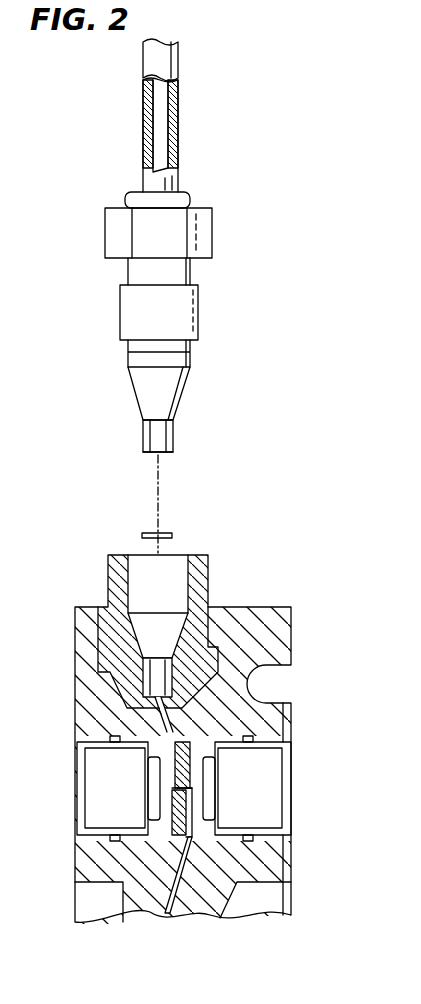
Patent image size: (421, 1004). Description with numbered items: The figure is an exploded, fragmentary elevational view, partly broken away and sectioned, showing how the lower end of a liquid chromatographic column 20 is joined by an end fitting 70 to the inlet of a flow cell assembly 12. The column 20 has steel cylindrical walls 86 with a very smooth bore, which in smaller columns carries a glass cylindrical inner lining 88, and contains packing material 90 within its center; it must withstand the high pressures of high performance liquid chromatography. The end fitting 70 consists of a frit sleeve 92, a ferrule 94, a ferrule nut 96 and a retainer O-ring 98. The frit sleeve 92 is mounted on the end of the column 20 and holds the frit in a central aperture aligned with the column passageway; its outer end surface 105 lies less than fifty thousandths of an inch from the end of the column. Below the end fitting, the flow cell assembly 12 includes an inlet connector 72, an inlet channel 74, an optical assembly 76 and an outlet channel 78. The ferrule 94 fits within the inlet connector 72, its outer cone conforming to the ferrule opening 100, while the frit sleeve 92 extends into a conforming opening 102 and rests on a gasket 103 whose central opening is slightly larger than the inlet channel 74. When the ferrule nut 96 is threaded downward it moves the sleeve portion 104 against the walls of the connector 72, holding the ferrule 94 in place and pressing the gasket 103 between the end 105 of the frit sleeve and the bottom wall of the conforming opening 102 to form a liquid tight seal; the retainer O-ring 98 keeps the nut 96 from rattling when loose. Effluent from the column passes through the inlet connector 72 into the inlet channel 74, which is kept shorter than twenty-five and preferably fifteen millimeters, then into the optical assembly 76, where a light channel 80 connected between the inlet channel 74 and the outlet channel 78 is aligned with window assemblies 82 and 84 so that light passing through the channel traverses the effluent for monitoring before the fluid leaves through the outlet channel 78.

The flow cell assembly 12 is at (195, 753).
The liquid chromatographic column 20 is at (199, 135).
The end fitting 70 is at (192, 384).
The inlet connector 72 is at (205, 578).
The inlet channel 74 is at (170, 727).
The optical assembly 76 is at (195, 788).
The outlet channel 78 is at (180, 910).
The light channel 80 is at (175, 783).
The window assembly 82 is at (268, 786).
The window assembly 84 is at (92, 777).
The steel cylindrical wall 86 is at (178, 126).
The glass cylindrical inner lining 88 is at (172, 152).
The packing material 90 is at (157, 108).
The frit sleeve 92 is at (172, 440).
The ferrule 94 is at (180, 397).
The ferrule nut 96 is at (178, 228).
The retainer O-ring 98 is at (186, 198).
The ferrule opening 100 is at (178, 622).
The conforming opening 102 is at (160, 672).
The gasket 103 is at (172, 535).
The sleeve portion 104 is at (180, 305).
The outer end surface 105 is at (165, 455).